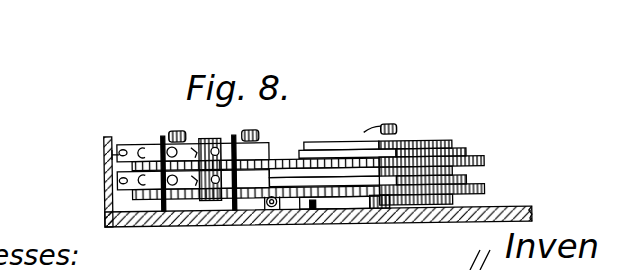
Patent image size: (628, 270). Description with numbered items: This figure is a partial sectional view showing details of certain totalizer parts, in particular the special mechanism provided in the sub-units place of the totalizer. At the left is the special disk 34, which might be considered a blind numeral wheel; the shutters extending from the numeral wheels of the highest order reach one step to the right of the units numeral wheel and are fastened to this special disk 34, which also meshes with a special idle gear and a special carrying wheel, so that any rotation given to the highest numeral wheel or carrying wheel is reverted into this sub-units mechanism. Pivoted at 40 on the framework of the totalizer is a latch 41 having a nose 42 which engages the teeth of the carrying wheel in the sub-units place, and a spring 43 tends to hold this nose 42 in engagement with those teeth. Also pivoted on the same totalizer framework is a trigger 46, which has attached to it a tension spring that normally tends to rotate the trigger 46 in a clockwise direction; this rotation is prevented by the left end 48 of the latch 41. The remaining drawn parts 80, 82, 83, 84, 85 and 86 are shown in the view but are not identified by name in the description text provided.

The special disk 34 is at (113, 183).
The pivot pin 86 is at (113, 155).
The knurled adjusting head 85 is at (283, 169).
The bar 80 is at (320, 148).
The ratchet wheel 84 is at (450, 147).
The ratchet wheel 83 is at (460, 157).
The ratchet wheel 82 is at (483, 168).
The trigger 46 is at (203, 217).
The left end of the latch 48 is at (230, 229).
The spring 43 is at (273, 229).
The pivot 40 is at (322, 220).
The latch 41 is at (342, 231).
The nose 42 is at (382, 221).